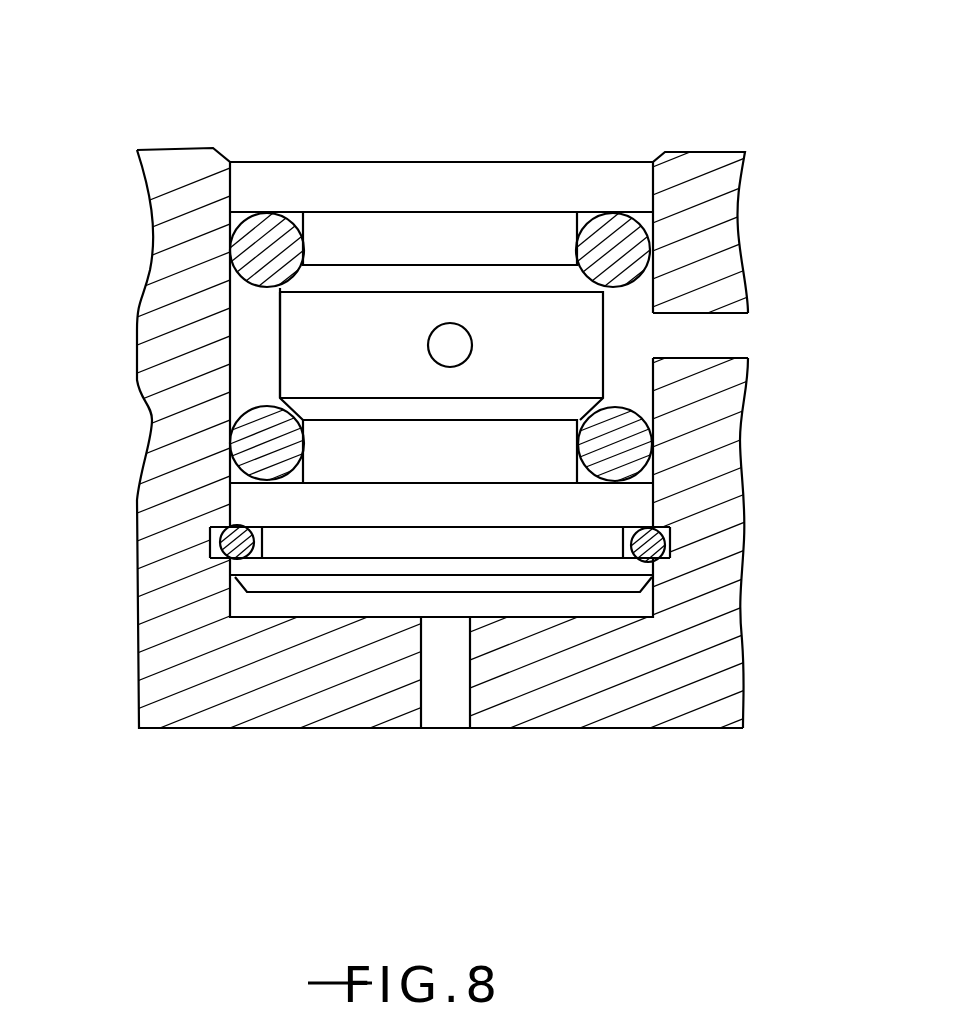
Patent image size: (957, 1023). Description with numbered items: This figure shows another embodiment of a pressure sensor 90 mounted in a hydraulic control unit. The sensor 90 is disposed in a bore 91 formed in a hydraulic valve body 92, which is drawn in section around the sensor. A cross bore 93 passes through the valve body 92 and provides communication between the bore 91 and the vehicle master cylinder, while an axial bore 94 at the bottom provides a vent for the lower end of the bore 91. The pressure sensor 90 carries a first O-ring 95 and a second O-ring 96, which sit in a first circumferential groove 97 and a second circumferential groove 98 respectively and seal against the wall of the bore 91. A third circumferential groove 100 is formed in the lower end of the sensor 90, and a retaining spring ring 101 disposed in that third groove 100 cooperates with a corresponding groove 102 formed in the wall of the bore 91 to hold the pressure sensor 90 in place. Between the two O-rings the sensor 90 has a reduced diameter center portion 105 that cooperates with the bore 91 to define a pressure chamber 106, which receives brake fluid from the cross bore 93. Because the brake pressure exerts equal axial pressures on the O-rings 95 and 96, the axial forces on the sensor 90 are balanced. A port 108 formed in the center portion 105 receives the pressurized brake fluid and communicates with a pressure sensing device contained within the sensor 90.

The pressure sensor 90 is at (490, 76).
The bore 91 is at (599, 138).
The hydraulic valve body 92 is at (728, 175).
The cross bore 93 is at (757, 330).
The axial bore 94 is at (440, 750).
The first O-ring 95 is at (620, 222).
The second O-ring 96 is at (634, 412).
The first circumferential groove 97 is at (588, 252).
The second circumferential groove 98 is at (580, 452).
The third circumferential groove 100 is at (622, 528).
The retaining spring ring 101 is at (250, 526).
The groove 102 is at (210, 546).
The reduced diameter center portion 105 is at (400, 369).
The pressure chamber 106 is at (262, 345).
The port 108 is at (460, 343).